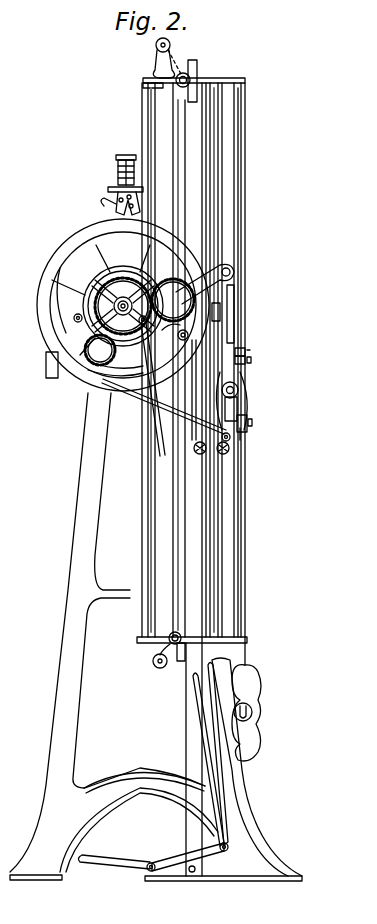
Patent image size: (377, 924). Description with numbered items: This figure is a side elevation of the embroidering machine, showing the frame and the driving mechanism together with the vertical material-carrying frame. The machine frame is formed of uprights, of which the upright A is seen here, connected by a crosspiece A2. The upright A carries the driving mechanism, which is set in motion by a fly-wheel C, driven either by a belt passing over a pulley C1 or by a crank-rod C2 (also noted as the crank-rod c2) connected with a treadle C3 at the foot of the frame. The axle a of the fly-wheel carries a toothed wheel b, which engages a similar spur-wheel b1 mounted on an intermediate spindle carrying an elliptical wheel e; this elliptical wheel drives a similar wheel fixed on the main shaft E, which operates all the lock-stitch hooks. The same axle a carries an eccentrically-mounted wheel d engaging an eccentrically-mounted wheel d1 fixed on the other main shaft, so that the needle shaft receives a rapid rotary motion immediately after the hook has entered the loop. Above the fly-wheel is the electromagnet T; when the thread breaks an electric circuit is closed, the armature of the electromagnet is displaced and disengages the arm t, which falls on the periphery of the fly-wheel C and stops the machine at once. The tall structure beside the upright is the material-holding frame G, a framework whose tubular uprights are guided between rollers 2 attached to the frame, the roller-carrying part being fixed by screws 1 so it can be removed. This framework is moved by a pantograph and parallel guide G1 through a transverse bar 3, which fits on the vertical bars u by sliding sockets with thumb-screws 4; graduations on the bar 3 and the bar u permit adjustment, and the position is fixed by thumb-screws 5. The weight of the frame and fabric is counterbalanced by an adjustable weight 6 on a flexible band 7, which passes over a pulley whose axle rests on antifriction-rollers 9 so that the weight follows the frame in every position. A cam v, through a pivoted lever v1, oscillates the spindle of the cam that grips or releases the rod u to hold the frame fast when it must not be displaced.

The screws 1 is at (192, 64).
The electromagnet T is at (114, 178).
The arm t is at (138, 208).
The material-holding frame G is at (213, 139).
The parallel guide G1 is at (177, 140).
The vertical bars u is at (249, 360).
The fly-wheel C is at (73, 246).
The pulley C1 is at (86, 305).
The axle a is at (116, 313).
The toothed wheel b is at (118, 284).
The spur-wheel b1 is at (188, 300).
The elliptical wheel e is at (207, 298).
The main shaft E is at (205, 334).
The thumb-screws 4 is at (247, 356).
The transverse bar 3 is at (247, 362).
The eccentrically-mounted wheel d is at (126, 325).
The eccentrically-mounted wheel d1 is at (104, 348).
The antifriction-rollers 9 is at (236, 402).
The thumb-screws 5 is at (251, 421).
The cam v is at (241, 432).
The crank-rod c2 is at (157, 441).
The rollers 2 is at (199, 454).
The flexible band 7 is at (241, 555).
The upright A is at (114, 636).
The crosspiece A2 is at (190, 727).
The adjustable weight 6 is at (246, 713).
The crank-rod C2 is at (215, 770).
The treadle C3 is at (186, 858).
The pivoted lever v1 is at (11, 916).